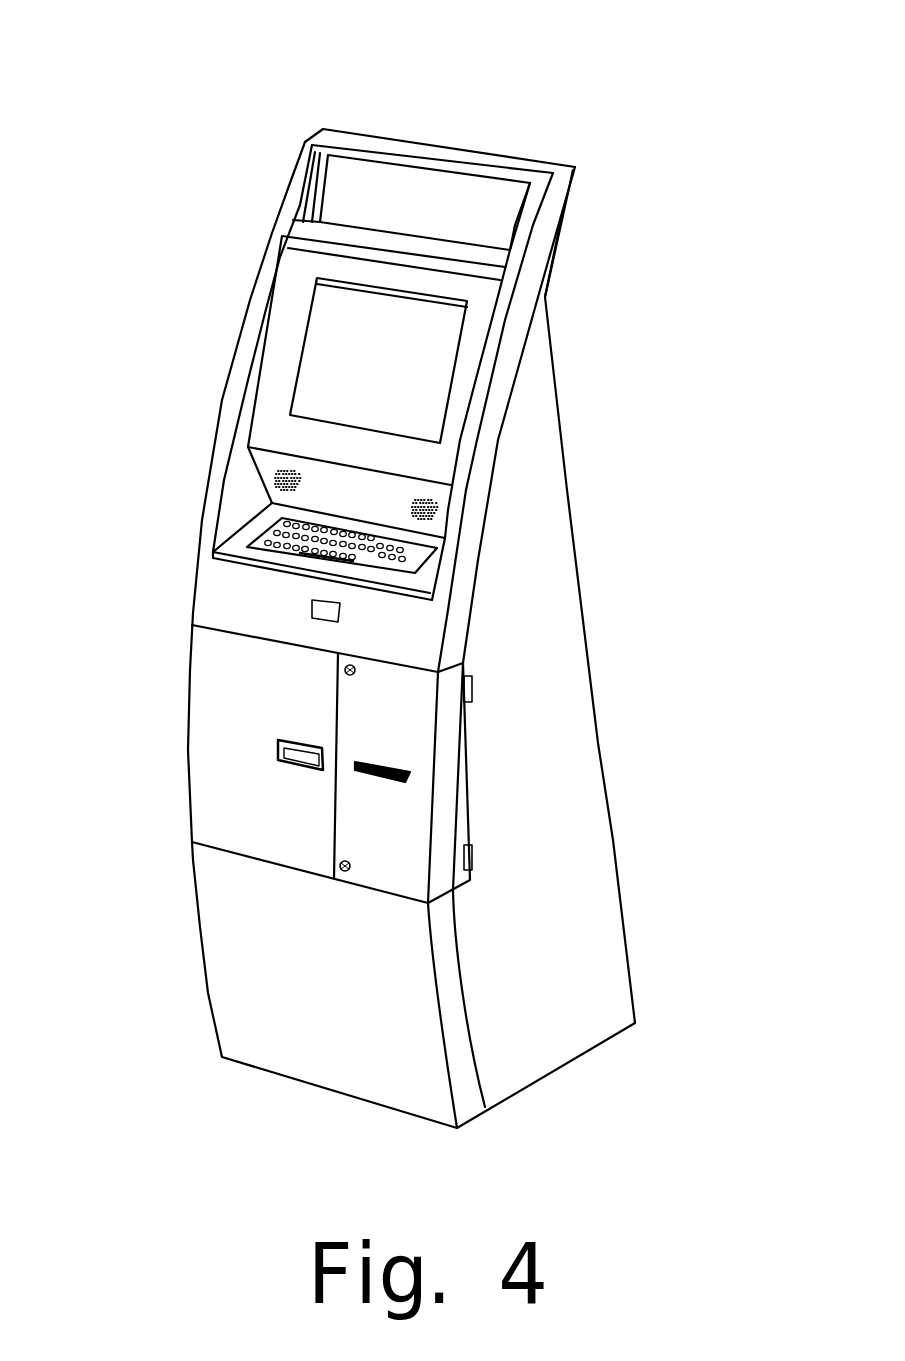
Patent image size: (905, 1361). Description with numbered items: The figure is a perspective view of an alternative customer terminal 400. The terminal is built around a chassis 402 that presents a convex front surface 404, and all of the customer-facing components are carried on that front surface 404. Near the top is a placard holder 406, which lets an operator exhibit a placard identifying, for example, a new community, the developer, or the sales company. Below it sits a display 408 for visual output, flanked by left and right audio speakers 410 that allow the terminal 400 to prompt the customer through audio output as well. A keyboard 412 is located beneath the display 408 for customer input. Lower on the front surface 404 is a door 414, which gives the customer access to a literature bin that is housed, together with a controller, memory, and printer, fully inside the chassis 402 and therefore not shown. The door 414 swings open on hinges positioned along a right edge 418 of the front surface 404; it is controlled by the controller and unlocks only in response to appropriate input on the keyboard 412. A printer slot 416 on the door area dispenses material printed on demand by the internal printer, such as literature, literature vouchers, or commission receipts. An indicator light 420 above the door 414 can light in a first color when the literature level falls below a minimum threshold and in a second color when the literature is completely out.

The customer terminal 400 is at (396, 580).
The chassis 402 is at (587, 820).
The front surface 404 is at (287, 1033).
The placard holder 406 is at (386, 182).
The display 408 is at (330, 353).
The audio speakers 410 is at (278, 491).
The keyboard 412 is at (420, 562).
The door 414 is at (243, 672).
The printer slot 416 is at (400, 763).
The right edge 418 is at (190, 750).
The indicator light 420 is at (313, 603).